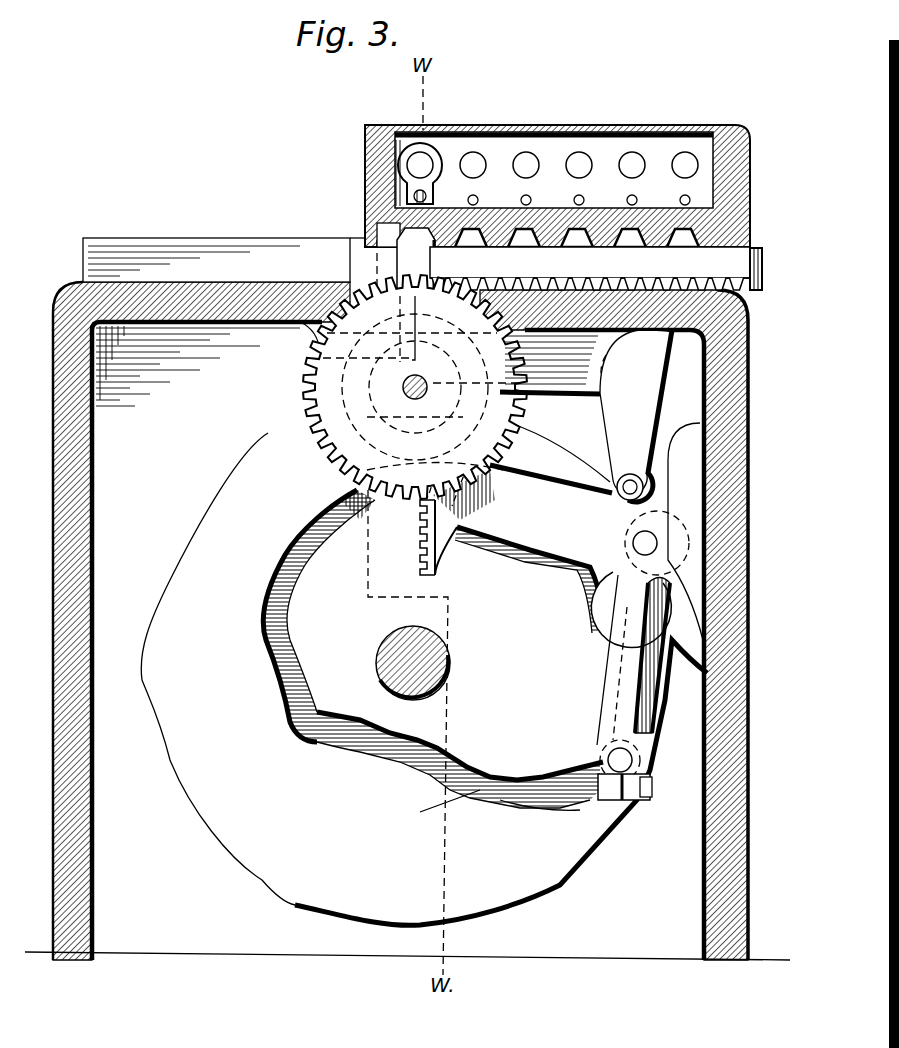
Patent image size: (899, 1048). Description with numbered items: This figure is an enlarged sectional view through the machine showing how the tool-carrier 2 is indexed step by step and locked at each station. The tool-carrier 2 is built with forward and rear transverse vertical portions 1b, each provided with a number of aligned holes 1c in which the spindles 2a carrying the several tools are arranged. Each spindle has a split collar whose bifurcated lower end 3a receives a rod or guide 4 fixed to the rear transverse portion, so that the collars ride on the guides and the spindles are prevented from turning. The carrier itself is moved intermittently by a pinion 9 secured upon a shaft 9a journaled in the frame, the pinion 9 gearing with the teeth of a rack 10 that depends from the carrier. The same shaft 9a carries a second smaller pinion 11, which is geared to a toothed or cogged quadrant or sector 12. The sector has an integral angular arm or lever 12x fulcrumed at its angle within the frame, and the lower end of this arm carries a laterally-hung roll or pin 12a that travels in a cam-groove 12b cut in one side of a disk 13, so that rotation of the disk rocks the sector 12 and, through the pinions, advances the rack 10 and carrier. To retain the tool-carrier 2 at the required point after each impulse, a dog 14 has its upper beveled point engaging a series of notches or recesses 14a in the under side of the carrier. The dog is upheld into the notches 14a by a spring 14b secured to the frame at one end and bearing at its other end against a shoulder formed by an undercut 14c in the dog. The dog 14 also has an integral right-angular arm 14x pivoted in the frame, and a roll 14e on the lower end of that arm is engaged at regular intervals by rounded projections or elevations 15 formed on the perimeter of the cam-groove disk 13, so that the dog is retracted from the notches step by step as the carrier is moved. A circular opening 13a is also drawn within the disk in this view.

The transverse vertical portion 1b is at (582, 125).
The holes 1c is at (475, 160).
The tool-carrier 2 is at (566, 125).
The spindles 2a is at (430, 140).
The bifurcated lower end 3a is at (396, 187).
The rod or guide 4 is at (522, 203).
The pinion 9 is at (305, 390).
The shaft 9a is at (403, 390).
The rack 10 is at (596, 268).
The second smaller pinion 11 is at (419, 483).
The toothed quadrant or sector 12 is at (522, 548).
The roll or pin 12a is at (602, 756).
The cam-groove 12b is at (472, 792).
The angular arm or lever 12x is at (613, 644).
The disk 13 is at (421, 636).
The plate opening 13a is at (452, 660).
The dog 14 is at (416, 256).
The notches or recesses 14a is at (568, 245).
The spring 14b is at (297, 318).
The undercut 14c is at (412, 364).
The roll 14e is at (600, 447).
The right-angular arm 14x is at (604, 352).
The projections or elevations 15 is at (265, 434).